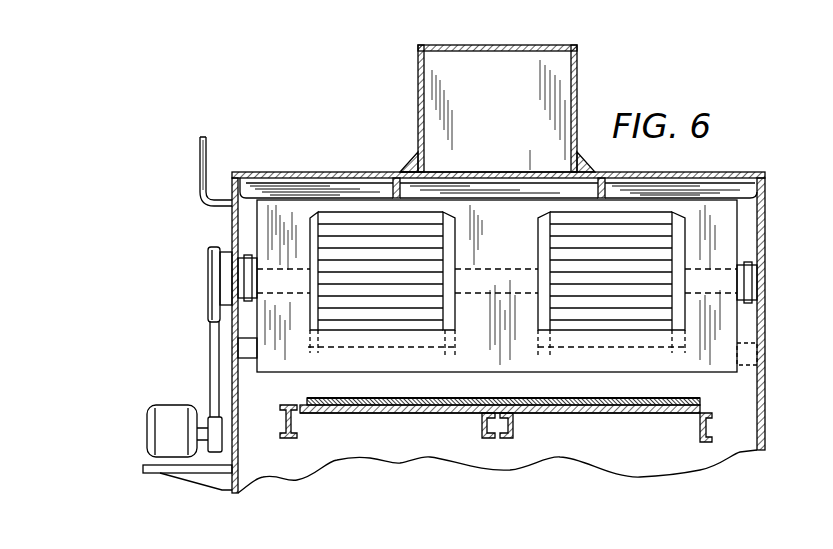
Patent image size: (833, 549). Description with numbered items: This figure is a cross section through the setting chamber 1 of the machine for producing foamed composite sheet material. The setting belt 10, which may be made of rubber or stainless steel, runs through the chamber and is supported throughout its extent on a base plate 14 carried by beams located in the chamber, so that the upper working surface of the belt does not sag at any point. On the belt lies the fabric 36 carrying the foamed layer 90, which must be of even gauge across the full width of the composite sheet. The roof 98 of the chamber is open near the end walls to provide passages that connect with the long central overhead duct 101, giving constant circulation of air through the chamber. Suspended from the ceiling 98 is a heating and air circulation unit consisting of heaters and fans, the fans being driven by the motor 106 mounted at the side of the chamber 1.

The setting chamber 1 is at (733, 177).
The central overhead duct 101 is at (558, 97).
The roof 98 is at (512, 173).
The motor 106 is at (196, 405).
The setting belt 10 is at (690, 406).
The foamed layer 90 is at (430, 398).
The fabric 36 is at (508, 399).
The base plate 14 is at (436, 414).